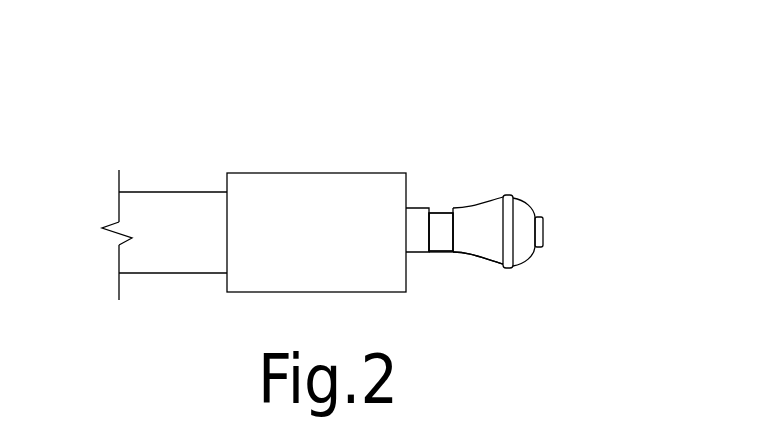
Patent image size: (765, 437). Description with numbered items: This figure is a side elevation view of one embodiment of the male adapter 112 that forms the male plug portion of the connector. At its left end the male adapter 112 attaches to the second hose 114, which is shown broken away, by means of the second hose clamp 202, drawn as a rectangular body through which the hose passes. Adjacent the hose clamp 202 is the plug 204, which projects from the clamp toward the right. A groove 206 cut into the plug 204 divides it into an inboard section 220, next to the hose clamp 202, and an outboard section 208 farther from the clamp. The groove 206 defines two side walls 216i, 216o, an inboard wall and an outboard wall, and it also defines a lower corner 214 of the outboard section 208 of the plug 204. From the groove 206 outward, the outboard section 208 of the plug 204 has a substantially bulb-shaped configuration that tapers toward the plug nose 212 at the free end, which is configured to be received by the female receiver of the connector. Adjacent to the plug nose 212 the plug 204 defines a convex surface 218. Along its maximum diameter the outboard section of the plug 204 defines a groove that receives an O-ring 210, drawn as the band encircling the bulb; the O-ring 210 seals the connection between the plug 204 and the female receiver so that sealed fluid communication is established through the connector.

The male adapter 112 is at (273, 102).
The second hose 114 is at (147, 192).
The second hose clamp 202 is at (252, 173).
The plug 204 is at (543, 328).
The groove 206 is at (441, 254).
The outboard section 208 is at (480, 203).
The O-ring 210 is at (508, 268).
The plug nose 212 is at (544, 232).
The lower corner 214 is at (453, 253).
The side wall 216o is at (441, 213).
The side wall 216i is at (448, 213).
The convex surface 218 is at (532, 208).
The inboard section 220 is at (418, 208).